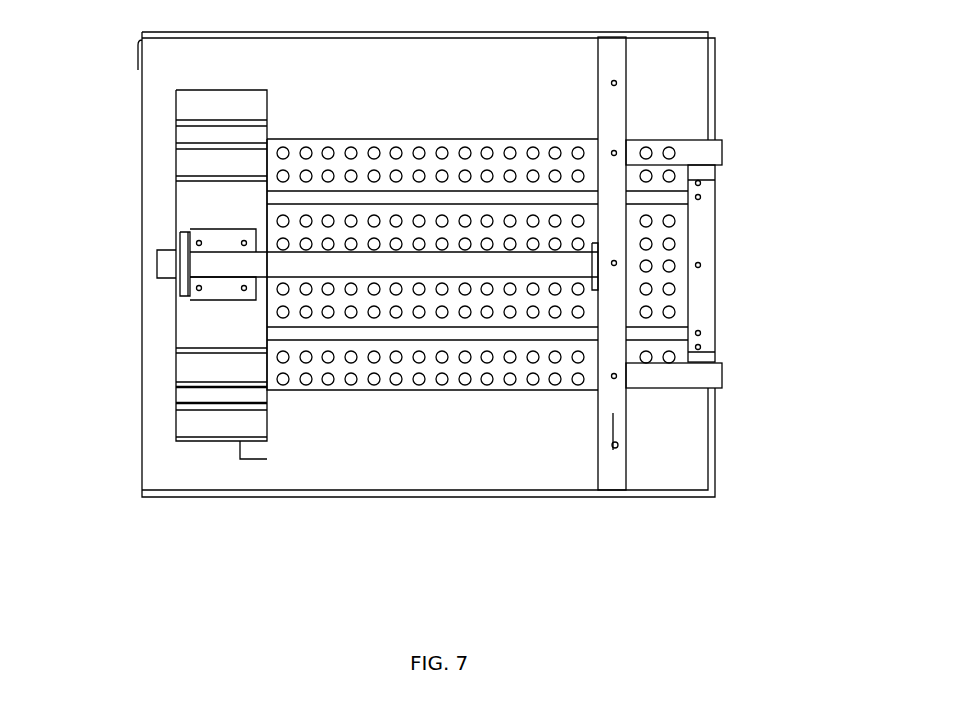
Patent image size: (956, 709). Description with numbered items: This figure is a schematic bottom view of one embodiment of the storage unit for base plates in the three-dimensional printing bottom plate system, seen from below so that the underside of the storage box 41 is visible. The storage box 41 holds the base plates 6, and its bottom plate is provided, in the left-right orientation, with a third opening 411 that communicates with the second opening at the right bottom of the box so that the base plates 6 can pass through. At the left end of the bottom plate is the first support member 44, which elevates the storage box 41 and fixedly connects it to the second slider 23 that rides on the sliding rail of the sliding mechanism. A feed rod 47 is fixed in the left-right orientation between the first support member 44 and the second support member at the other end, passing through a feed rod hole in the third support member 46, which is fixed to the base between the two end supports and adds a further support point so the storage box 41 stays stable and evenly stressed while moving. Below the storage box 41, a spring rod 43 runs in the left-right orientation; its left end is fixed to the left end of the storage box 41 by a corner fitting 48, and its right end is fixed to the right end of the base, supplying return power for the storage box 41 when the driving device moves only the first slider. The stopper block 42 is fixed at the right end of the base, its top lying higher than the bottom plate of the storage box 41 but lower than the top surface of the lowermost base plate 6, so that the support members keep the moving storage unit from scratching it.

The base plate 6 is at (522, 377).
The second slider 23 is at (190, 127).
The storage box 41 is at (663, 450).
The stopper block 42 is at (722, 377).
The spring rod 43 is at (337, 258).
The first support member 44 is at (188, 320).
The third support member 46 is at (702, 302).
The feed rod 47 is at (658, 197).
The corner fitting 48 is at (185, 258).
The third opening 411 is at (585, 390).